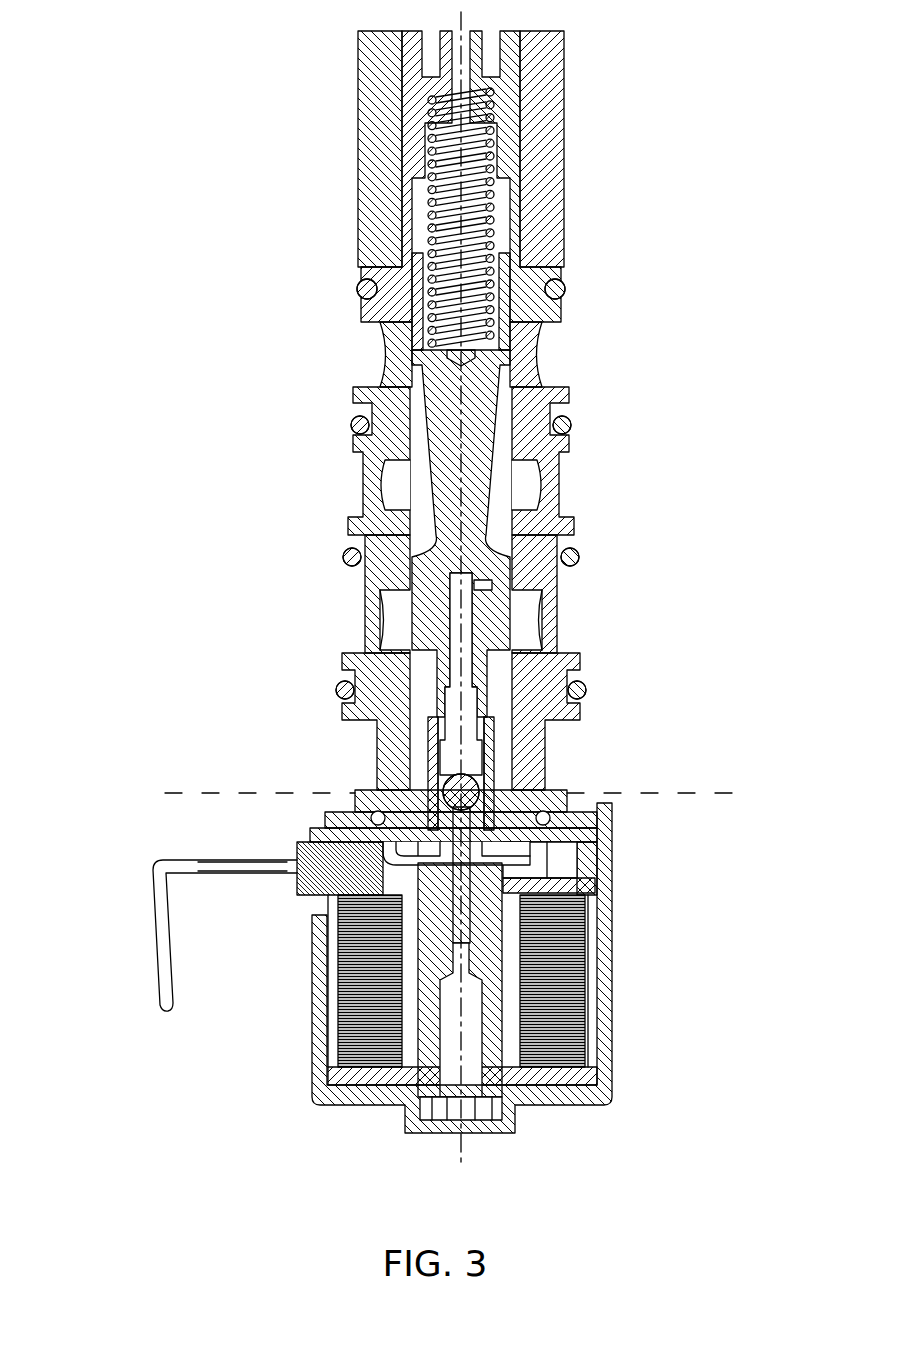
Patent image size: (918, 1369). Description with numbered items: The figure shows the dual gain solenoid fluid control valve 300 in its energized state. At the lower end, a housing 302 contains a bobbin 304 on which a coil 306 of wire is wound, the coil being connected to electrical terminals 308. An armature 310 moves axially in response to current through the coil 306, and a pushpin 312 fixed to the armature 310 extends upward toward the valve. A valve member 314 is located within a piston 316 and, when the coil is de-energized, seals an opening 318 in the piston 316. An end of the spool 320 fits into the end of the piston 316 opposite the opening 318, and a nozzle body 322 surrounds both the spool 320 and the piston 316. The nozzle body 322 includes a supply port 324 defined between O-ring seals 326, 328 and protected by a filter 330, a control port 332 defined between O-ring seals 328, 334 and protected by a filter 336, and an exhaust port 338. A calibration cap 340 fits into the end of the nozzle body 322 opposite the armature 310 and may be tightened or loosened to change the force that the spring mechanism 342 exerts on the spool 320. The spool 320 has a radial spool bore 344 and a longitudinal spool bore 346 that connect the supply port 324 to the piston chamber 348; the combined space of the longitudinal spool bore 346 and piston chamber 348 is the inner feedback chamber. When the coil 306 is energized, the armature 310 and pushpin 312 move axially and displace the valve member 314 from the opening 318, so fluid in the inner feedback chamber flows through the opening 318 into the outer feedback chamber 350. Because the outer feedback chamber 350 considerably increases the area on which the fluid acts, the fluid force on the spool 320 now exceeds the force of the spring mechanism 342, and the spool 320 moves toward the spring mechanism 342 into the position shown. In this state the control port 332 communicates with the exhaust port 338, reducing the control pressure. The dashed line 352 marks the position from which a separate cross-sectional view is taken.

The solenoid fluid control valve 300 is at (761, 96).
The housing 302 is at (612, 950).
The bobbin 304 is at (590, 868).
The coil 306 is at (567, 1027).
The electrical terminals 308 is at (158, 952).
The armature 310 is at (487, 923).
The pushpin 312 is at (463, 880).
The valve member 314 is at (478, 795).
The piston 316 is at (490, 763).
The opening 318 is at (433, 831).
The spool 320 is at (418, 637).
The nozzle body 322 is at (580, 717).
The supply port 324 is at (562, 622).
The O-ring seal 326 is at (336, 693).
The O-ring seal 328 is at (343, 557).
The filter 330 is at (366, 627).
The control port 332 is at (352, 505).
The O-ring seal 334 is at (350, 424).
The filter 336 is at (378, 483).
The exhaust port 338 is at (372, 355).
The calibration cap 340 is at (507, 95).
The spring mechanism 342 is at (474, 265).
The radial spool bore 344 is at (512, 578).
The longitudinal spool bore 346 is at (465, 647).
The piston chamber 348 is at (475, 820).
The outer feedback chamber 350 is at (420, 747).
The dashed line 352 is at (480, 794).